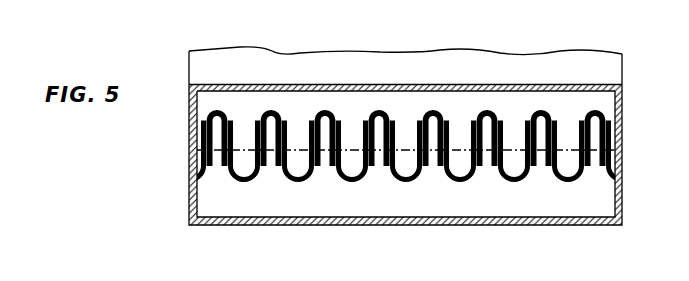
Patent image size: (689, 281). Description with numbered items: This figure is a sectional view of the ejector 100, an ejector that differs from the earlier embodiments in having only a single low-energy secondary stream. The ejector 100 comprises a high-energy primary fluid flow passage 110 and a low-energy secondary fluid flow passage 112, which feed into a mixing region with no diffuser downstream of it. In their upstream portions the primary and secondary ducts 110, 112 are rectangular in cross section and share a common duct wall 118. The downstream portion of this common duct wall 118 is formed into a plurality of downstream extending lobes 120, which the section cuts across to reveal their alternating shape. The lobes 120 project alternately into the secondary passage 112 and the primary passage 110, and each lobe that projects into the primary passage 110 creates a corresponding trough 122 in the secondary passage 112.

The ejector 100 is at (500, 43).
The high-energy primary fluid flow passage 110 is at (423, 212).
The low-energy secondary fluid flow passage 112 is at (437, 95).
The common duct wall 118 is at (460, 150).
The lobes 120 is at (273, 109).
The trough 122 is at (330, 117).